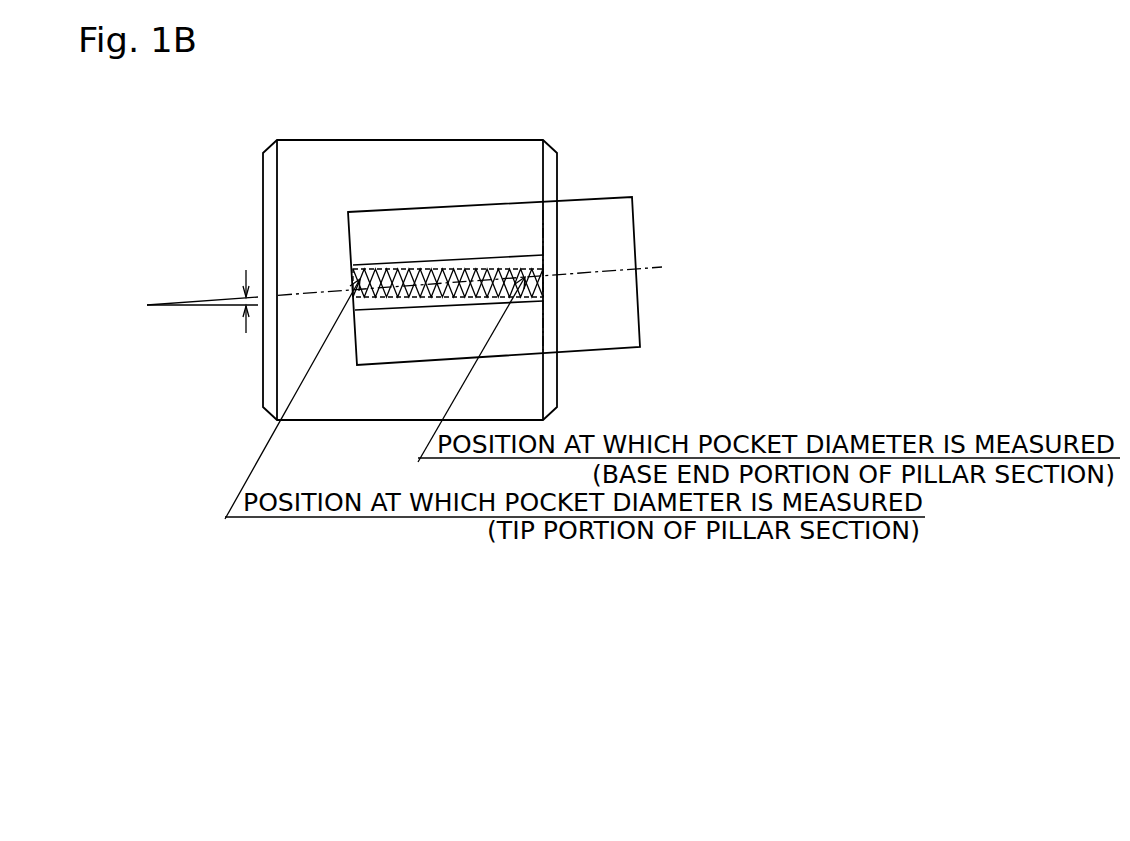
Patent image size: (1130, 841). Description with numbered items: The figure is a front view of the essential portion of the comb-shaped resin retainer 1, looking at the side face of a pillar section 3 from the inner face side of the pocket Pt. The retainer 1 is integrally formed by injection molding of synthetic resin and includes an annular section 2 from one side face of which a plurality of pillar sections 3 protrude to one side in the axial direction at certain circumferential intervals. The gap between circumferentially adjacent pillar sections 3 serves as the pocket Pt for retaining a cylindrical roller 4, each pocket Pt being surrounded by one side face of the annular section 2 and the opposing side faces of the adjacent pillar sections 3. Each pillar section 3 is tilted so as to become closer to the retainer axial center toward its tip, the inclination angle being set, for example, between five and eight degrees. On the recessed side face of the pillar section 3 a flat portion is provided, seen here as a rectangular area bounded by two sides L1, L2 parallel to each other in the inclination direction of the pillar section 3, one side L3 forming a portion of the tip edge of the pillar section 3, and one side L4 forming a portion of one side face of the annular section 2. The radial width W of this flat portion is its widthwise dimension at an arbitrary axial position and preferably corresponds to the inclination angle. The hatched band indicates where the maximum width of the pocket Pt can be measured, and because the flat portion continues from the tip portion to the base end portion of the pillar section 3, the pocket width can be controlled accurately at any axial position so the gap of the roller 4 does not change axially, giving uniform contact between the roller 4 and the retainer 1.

The comb-shaped resin retainer 1 is at (720, 173).
The annular section 2 is at (615, 240).
The pillar section 3 is at (453, 220).
The cylindrical roller 4 is at (317, 155).
The radial width of the flat portion W is at (398, 330).
The pocket Pt is at (495, 233).
The side of the flat area L1 is at (517, 253).
The side of the flat area L2 is at (512, 300).
The side of the flat area L3 is at (352, 272).
The side of the flat area L4 is at (543, 260).